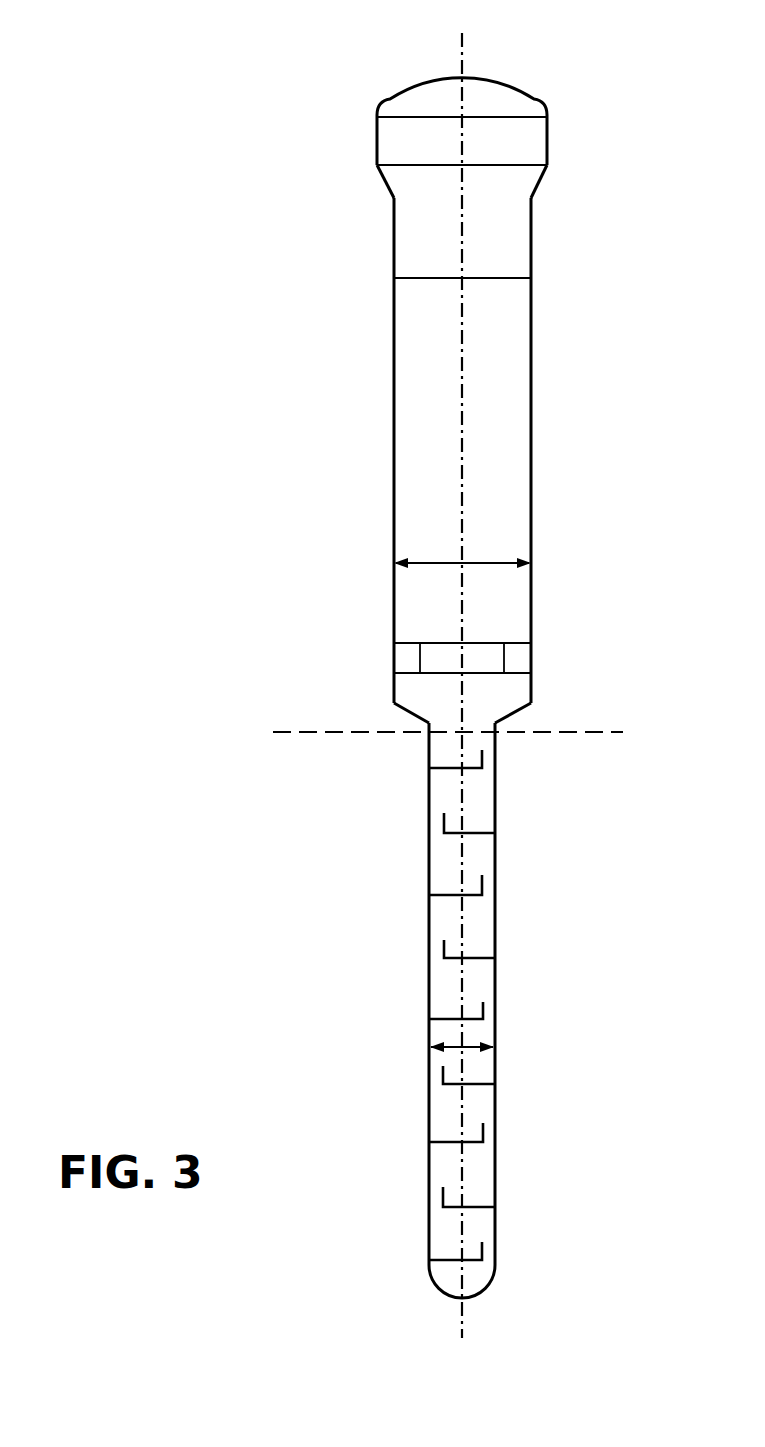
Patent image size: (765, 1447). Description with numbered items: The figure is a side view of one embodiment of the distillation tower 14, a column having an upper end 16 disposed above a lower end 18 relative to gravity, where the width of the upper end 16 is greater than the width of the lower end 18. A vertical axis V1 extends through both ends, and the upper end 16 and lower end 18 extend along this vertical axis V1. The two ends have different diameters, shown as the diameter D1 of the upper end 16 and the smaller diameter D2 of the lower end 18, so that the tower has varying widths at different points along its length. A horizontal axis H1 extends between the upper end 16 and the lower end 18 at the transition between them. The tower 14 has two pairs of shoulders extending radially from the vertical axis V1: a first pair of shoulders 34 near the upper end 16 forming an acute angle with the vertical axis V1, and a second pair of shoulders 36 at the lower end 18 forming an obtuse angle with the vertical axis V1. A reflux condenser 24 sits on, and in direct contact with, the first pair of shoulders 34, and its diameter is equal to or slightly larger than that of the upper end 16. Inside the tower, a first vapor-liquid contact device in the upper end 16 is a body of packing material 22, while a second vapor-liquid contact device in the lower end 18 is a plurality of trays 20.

The distillation tower 14 is at (380, 674).
The upper end 16 is at (486, 400).
The lower end 18 is at (503, 1010).
The trays 20 is at (435, 772).
The packing material 22 is at (405, 414).
The reflux condenser 24 is at (537, 138).
The first pair of shoulders 34 is at (380, 178).
The second pair of shoulders 36 is at (405, 712).
The diameter of the upper end D1 is at (437, 562).
The diameter of the lower end D2 is at (428, 1011).
The horizontal axis H1 is at (593, 730).
The vertical axis V1 is at (462, 52).